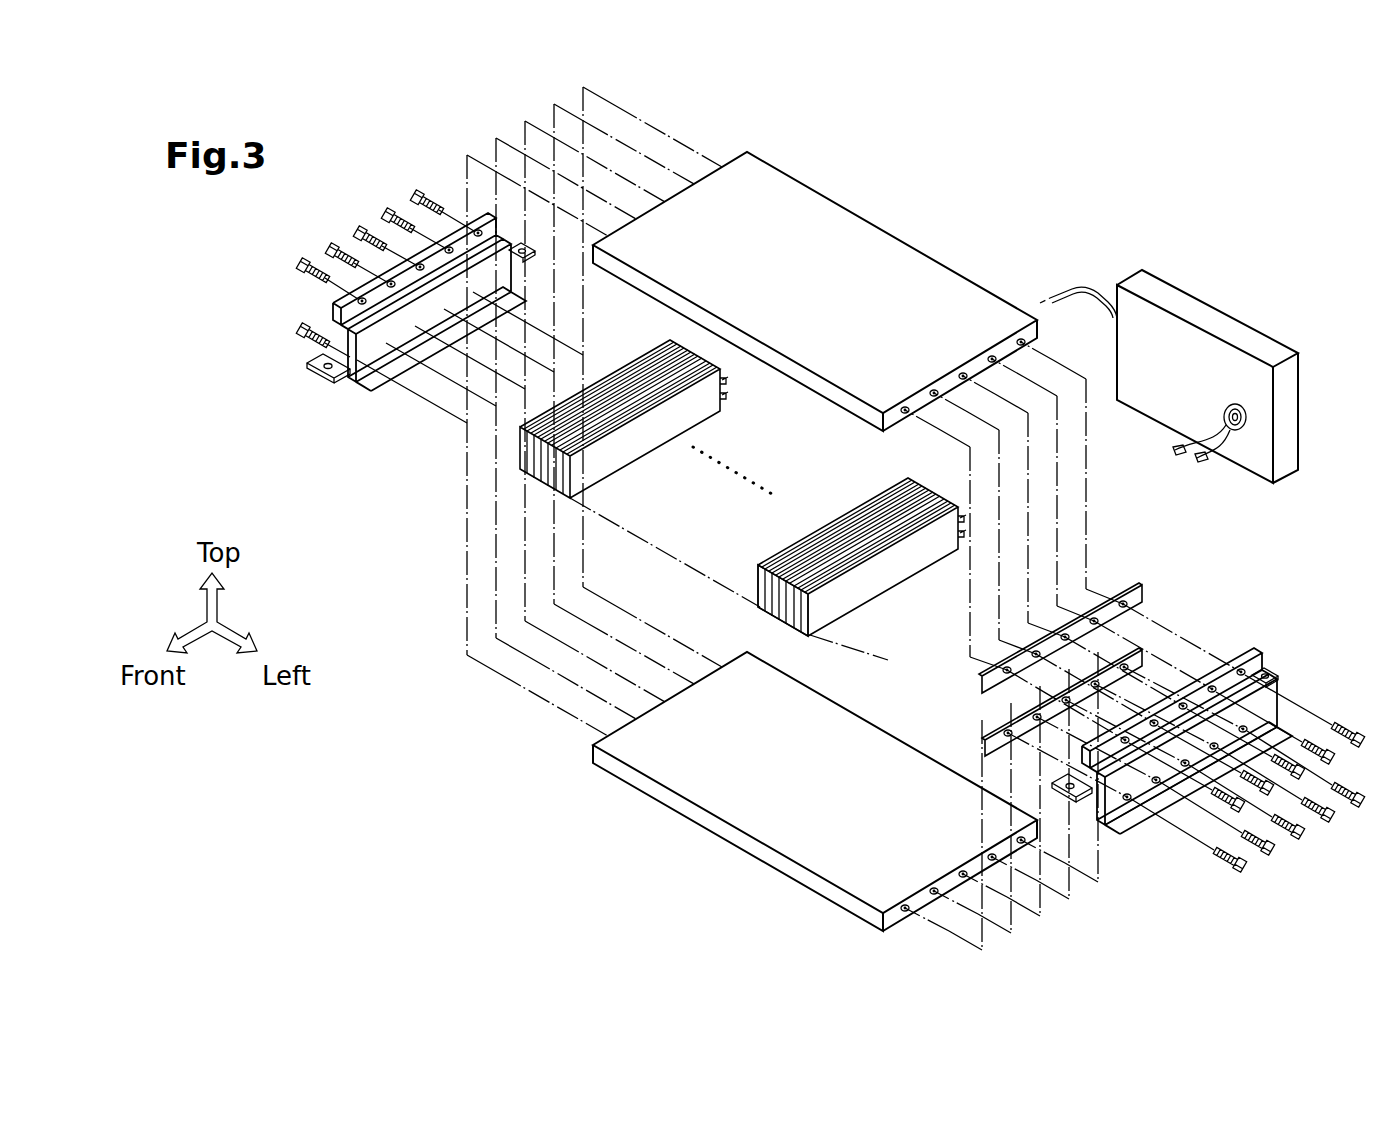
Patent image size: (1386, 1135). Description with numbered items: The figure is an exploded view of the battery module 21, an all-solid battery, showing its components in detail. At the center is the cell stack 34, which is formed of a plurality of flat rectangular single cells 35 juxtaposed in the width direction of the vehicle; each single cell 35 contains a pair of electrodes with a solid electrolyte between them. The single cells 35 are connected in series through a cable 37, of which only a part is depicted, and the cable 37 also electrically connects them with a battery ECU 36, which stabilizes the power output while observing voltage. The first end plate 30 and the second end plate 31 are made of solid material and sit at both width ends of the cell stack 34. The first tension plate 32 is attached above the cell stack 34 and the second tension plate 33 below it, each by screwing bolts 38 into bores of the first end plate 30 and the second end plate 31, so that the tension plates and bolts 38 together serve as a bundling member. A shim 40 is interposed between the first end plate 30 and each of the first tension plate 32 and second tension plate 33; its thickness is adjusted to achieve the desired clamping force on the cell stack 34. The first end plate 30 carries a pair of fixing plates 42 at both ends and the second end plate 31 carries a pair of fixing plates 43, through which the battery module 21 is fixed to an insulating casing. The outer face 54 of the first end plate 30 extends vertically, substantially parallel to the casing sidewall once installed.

The battery module 21 is at (1082, 177).
The first end plate 30 is at (1262, 645).
The second end plate 31 is at (363, 392).
The first tension plate 32 is at (921, 260).
The second tension plate 33 is at (685, 830).
The cell stack 34 is at (752, 595).
The single cell 35 is at (520, 456).
The battery ECU 36 is at (1244, 318).
The cable 37 is at (1088, 278).
The bolts 38 is at (278, 271).
The shim 40 is at (1152, 590).
The fixing plates 42 is at (1275, 683).
The fixing plates 43 is at (530, 254).
The outer face 54 is at (1118, 822).